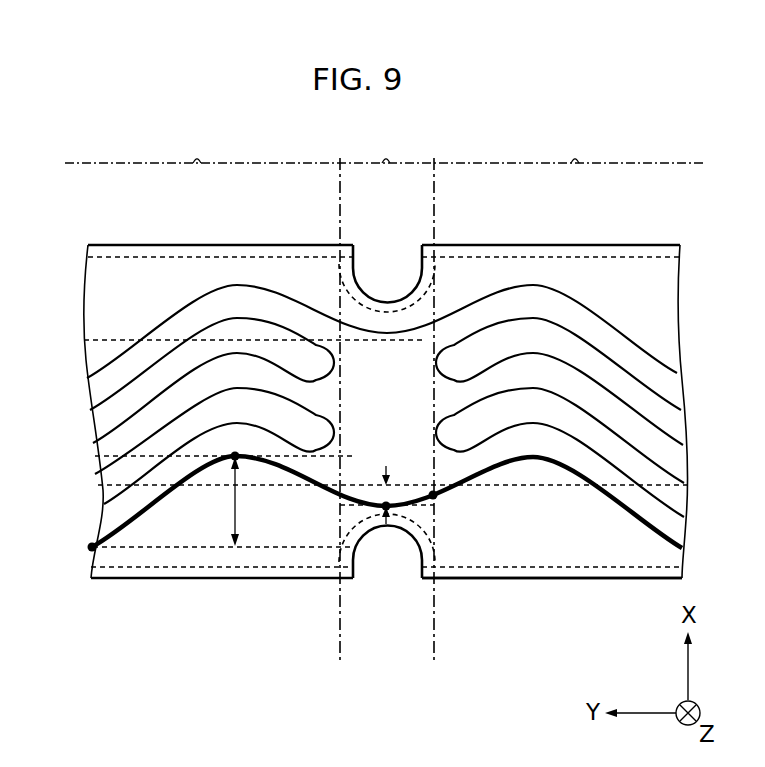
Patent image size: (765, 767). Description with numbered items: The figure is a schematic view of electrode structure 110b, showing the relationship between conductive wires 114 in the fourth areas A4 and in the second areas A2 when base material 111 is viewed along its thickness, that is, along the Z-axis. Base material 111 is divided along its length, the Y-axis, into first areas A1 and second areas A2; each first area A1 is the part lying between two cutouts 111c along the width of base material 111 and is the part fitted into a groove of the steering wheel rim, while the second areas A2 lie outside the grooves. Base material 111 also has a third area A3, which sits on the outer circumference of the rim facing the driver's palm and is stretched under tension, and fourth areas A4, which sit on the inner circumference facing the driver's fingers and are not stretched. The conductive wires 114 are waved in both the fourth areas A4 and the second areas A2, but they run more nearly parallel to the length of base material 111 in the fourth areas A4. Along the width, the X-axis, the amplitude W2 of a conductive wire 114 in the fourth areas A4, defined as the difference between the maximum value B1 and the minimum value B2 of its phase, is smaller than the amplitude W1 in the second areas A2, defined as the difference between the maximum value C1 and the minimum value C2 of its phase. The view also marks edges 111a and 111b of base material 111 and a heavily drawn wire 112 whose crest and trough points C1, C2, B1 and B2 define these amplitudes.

The base material 111 is at (209, 245).
The lower edge of fin plate 111a is at (226, 579).
The upper edge of fin plate 111b is at (643, 258).
The cutout 111c is at (412, 283).
The ridge line (crest) of fin 112 is at (166, 548).
The conductive wire 114 is at (542, 283).
The electrode structure 110b is at (580, 598).
The first area A1 is at (387, 396).
The second area A2 is at (385, 147).
The third area A3 is at (405, 425).
The fourth area A4 is at (373, 320).
The maximum value B1 is at (435, 500).
The minimum value B2 is at (387, 511).
The maximum value C1 is at (237, 460).
The minimum value C2 is at (90, 549).
The amplitude W1 is at (218, 501).
The amplitude W2 is at (386, 482).